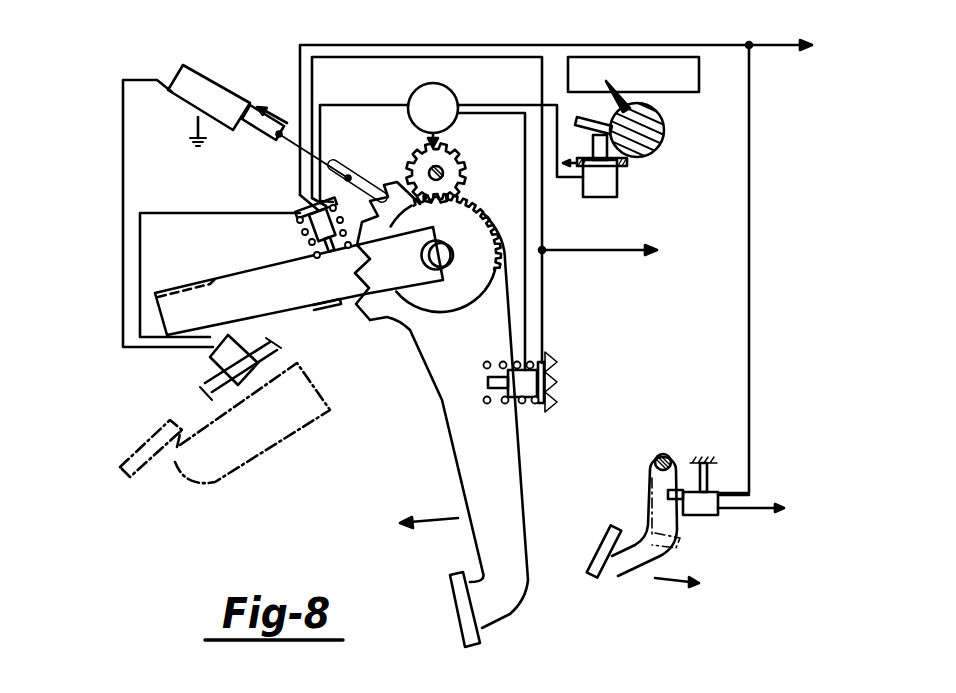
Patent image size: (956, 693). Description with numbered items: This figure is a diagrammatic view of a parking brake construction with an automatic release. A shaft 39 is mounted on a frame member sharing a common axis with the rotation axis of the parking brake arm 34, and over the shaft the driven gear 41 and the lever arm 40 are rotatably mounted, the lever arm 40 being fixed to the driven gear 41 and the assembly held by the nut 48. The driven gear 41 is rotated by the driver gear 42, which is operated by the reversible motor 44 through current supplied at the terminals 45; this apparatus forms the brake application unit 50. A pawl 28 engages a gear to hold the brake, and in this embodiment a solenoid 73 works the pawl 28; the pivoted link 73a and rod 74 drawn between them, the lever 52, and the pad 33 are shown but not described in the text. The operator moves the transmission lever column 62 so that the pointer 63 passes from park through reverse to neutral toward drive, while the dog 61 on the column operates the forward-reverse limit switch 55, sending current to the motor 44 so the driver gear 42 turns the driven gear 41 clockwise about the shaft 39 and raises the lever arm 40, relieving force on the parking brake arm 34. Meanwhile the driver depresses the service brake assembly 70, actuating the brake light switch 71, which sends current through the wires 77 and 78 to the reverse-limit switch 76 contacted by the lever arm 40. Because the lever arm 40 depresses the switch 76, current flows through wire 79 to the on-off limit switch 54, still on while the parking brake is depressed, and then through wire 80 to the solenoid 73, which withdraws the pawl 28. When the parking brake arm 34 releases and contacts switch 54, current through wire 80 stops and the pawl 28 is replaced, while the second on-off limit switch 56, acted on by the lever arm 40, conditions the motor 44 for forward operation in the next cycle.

The pawl 28 is at (402, 135).
The brake pedal pad 33 is at (450, 620).
The parking brake arm 34 is at (522, 503).
The shaft 39 is at (438, 275).
The lever arm 40 is at (290, 310).
The driven gear 41 is at (525, 268).
The driver gear 42 is at (462, 165).
The reversible motor 44 is at (412, 95).
The terminals 45 is at (463, 105).
The nut 48 is at (440, 268).
The brake application unit 50 is at (354, 488).
The plate 52 is at (203, 283).
The on-off limit switch 54 is at (207, 368).
The forward-reverse limit switch 55 is at (600, 197).
The second on-off limit switch 56 is at (557, 385).
The dog 61 is at (553, 170).
The transmission lever column 62 is at (657, 150).
The pointer 63 is at (647, 103).
The service brake assembly 70 is at (588, 560).
The brake light switch 71 is at (720, 503).
The solenoid 73 is at (207, 90).
The link 73a is at (253, 128).
The piston rod 74 is at (253, 137).
The reverse-limit switch 76 is at (296, 232).
The wire 77 is at (750, 343).
The wire 78 is at (298, 48).
The wire 79 is at (145, 240).
The wire 80 is at (124, 238).